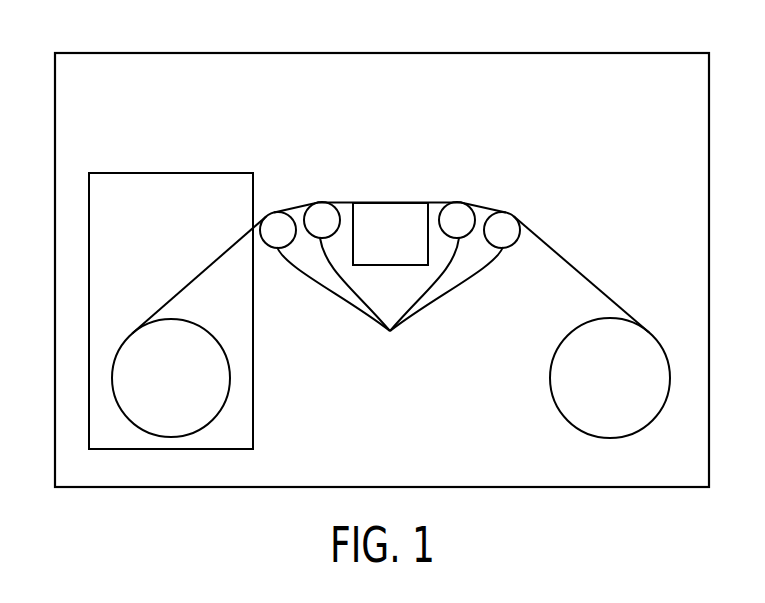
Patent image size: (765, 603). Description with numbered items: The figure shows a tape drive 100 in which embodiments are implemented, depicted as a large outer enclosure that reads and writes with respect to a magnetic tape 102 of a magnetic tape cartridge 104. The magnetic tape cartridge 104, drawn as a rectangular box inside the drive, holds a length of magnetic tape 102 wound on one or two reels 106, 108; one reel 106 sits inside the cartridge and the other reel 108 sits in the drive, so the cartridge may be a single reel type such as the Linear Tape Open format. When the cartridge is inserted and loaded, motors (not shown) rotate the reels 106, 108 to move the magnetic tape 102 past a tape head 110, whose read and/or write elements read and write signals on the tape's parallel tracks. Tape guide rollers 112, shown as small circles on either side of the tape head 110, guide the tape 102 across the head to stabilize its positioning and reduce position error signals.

The tape drive 100 is at (103, 53).
The magnetic tape 102 is at (200, 272).
The magnetic tape cartridge 104 is at (170, 173).
The reel 106 is at (230, 378).
The reel 108 is at (550, 378).
The tape head 110 is at (390, 232).
The tape guide rollers 112 is at (390, 305).